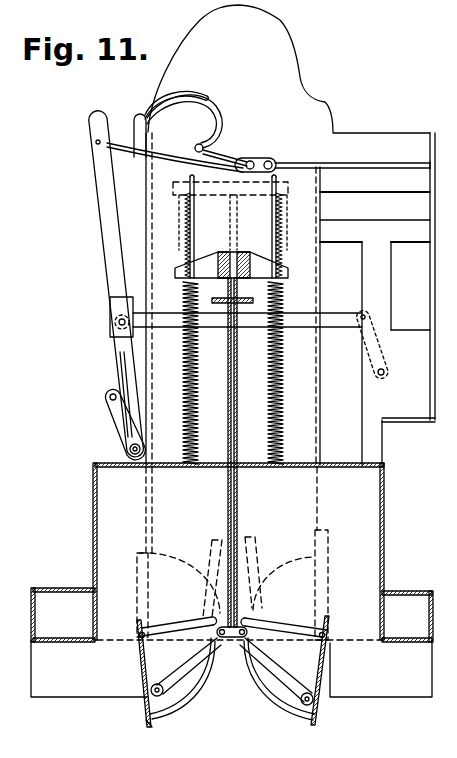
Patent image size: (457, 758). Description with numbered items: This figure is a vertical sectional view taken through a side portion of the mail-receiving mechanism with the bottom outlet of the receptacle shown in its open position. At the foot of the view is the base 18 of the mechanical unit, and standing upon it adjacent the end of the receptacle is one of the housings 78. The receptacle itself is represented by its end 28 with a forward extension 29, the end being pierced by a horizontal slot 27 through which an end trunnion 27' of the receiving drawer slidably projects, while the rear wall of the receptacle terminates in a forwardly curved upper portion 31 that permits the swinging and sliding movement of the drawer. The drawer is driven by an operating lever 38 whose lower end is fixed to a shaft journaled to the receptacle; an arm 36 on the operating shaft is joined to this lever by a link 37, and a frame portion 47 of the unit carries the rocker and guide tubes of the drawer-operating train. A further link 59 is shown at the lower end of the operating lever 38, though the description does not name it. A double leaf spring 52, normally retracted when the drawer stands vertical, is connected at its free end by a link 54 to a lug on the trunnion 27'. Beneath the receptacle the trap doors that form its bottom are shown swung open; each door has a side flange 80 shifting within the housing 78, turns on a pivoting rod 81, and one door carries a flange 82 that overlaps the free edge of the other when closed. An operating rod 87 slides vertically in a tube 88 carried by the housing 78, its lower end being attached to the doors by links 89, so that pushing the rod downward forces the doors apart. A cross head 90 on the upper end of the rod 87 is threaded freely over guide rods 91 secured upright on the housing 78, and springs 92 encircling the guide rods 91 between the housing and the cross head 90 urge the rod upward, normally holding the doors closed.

The base 18 is at (410, 598).
The horizontal slots 27 is at (352, 153).
The end trunnions 27' is at (270, 152).
The receptacle ends 28 is at (212, 97).
The forward extensions 29 is at (375, 300).
The forwardly curved upper portion 31 is at (190, 26).
The arms 36 is at (360, 318).
The links 37 is at (127, 303).
The operating levers 38 is at (107, 218).
The frame portion 47 is at (363, 312).
The double leaf spring 52 is at (216, 108).
The links 54 is at (223, 162).
The link 59 is at (115, 410).
The housings 78 is at (93, 497).
The side flanges 80 is at (322, 557).
The pivoting rods 81 is at (331, 624).
The flange 82 is at (147, 718).
The operating rods 87 is at (238, 507).
The tubes 88 is at (228, 452).
The links 89 is at (255, 557).
The cross head 90 is at (208, 260).
The guide rods 91 is at (272, 181).
The springs 92 is at (183, 370).